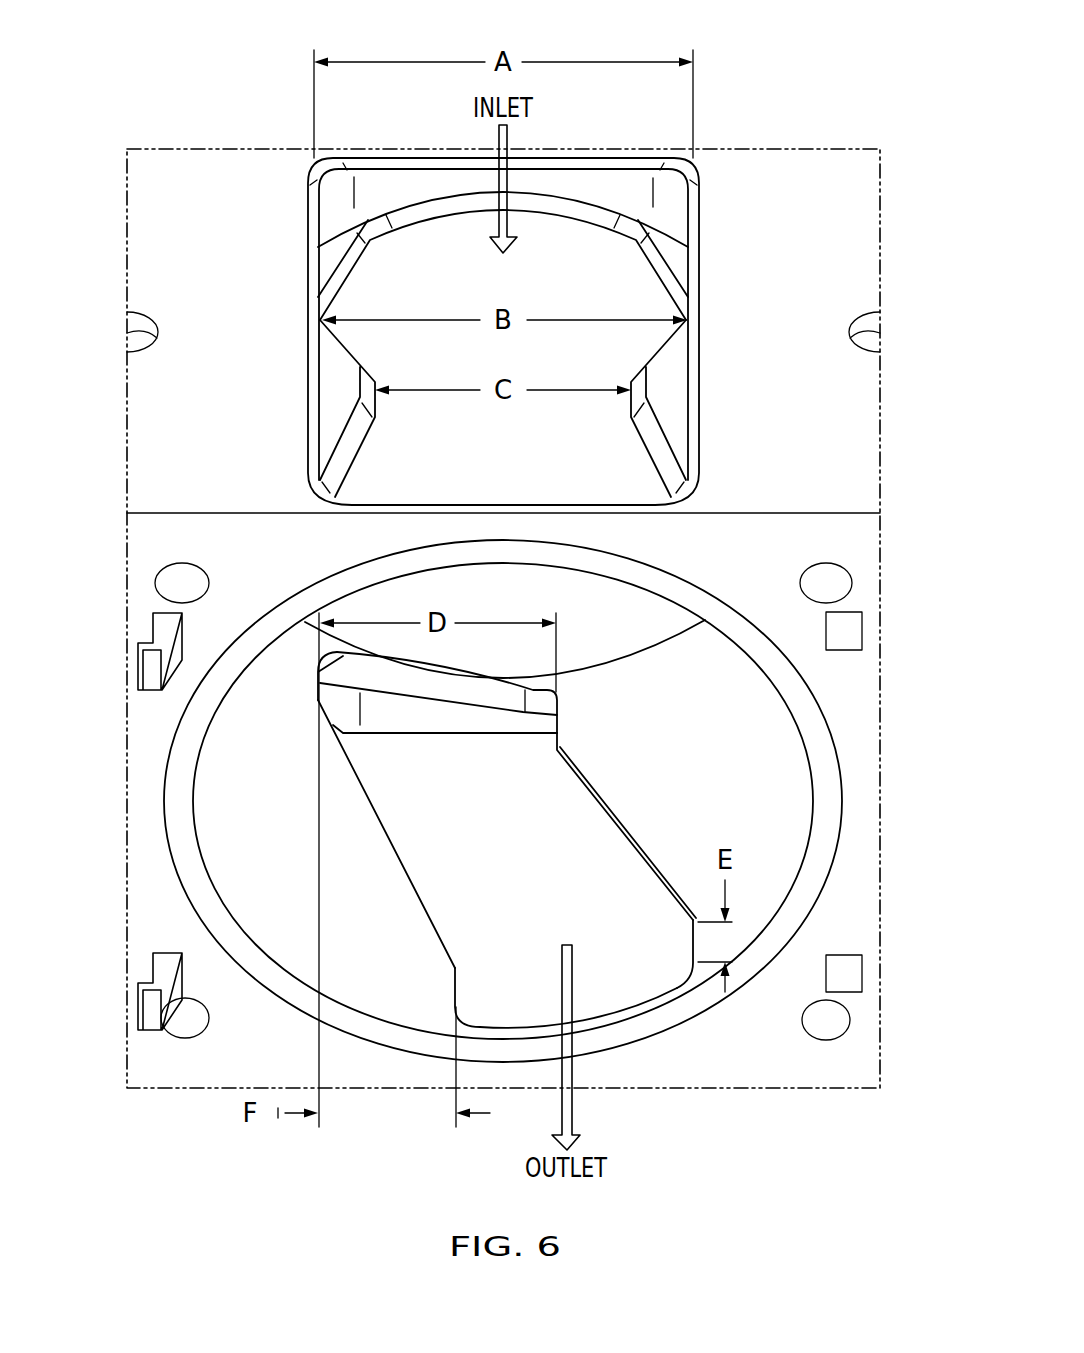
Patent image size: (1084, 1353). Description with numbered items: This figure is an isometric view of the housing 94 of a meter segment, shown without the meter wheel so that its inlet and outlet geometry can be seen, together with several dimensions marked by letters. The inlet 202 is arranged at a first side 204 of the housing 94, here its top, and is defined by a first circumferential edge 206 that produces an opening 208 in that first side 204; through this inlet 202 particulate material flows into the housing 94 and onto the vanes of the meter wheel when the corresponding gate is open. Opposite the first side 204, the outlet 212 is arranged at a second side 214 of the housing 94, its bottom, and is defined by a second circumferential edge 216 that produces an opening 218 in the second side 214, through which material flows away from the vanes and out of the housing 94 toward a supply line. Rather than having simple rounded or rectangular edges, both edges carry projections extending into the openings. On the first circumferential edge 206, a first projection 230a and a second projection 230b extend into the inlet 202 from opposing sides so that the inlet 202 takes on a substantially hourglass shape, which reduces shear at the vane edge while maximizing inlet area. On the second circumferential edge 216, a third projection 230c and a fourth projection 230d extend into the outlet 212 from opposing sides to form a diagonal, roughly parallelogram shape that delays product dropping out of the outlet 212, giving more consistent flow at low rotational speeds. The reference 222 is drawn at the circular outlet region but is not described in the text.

The housing 94 is at (143, 112).
The inlet 202 is at (582, 130).
The first side 204 is at (180, 373).
The first circumferential edge 206 is at (667, 277).
The opening 208 is at (583, 250).
The outlet 212 is at (610, 980).
The second side 214 is at (175, 1090).
The second circumferential edge 216 is at (593, 820).
The opening 218 is at (630, 915).
The outlet ring 222 is at (747, 737).
The first projection 230a is at (337, 385).
The second projection 230b is at (670, 385).
The third projection 230c is at (437, 975).
The fourth projection 230d is at (578, 747).